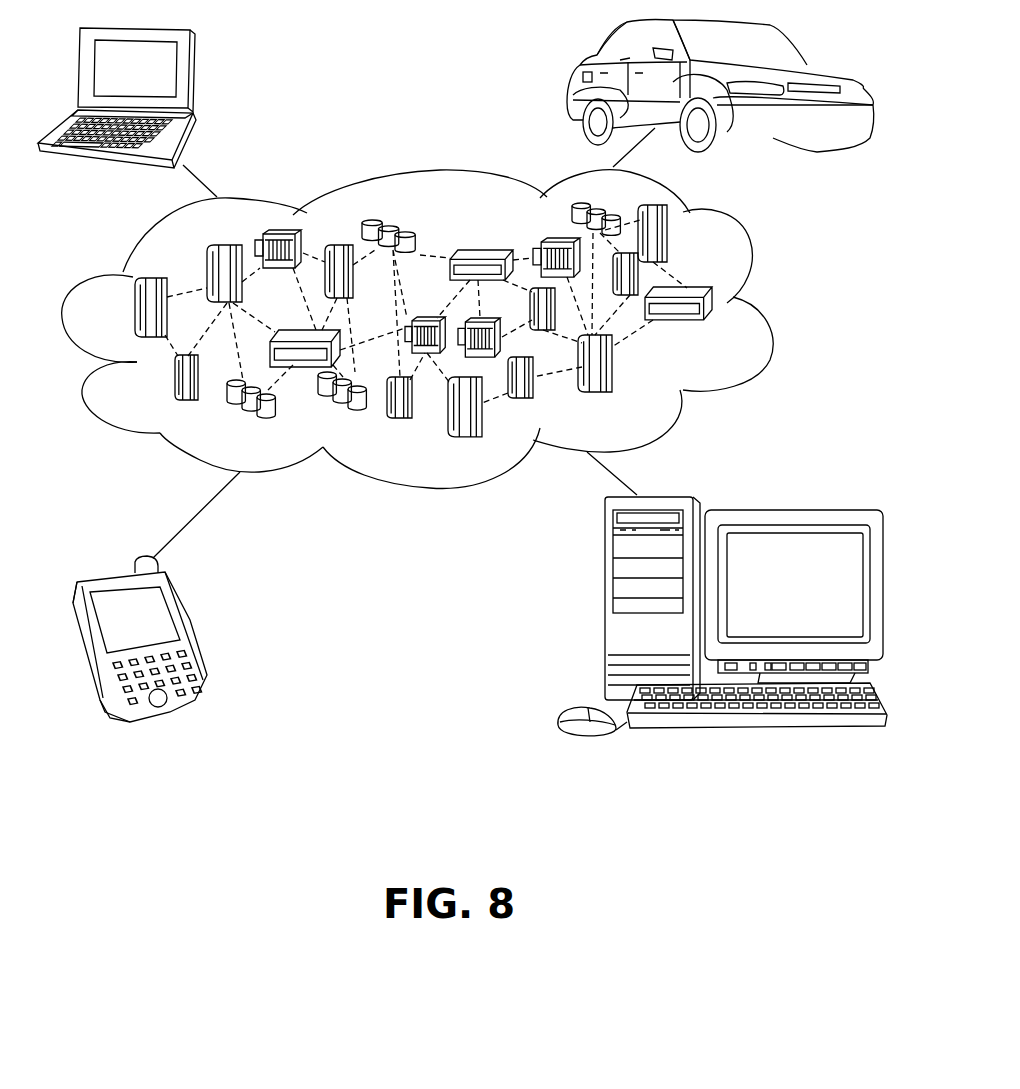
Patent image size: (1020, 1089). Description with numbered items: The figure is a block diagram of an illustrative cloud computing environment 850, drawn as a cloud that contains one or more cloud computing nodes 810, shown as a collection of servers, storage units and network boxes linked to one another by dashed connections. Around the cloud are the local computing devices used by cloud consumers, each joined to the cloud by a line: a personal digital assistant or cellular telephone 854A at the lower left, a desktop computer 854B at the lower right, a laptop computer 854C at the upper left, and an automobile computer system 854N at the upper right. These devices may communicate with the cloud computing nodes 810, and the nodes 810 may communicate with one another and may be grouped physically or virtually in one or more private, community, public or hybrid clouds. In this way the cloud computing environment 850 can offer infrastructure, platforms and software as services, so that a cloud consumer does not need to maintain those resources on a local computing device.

The cloud computing nodes 810 is at (732, 325).
The cloud computing environment 850 is at (757, 265).
The personal digital assistant (PDA) or cellular telephone 854A is at (187, 623).
The desktop computer 854B is at (605, 607).
The laptop computer 854C is at (193, 73).
The automobile computer system 854N is at (577, 77).